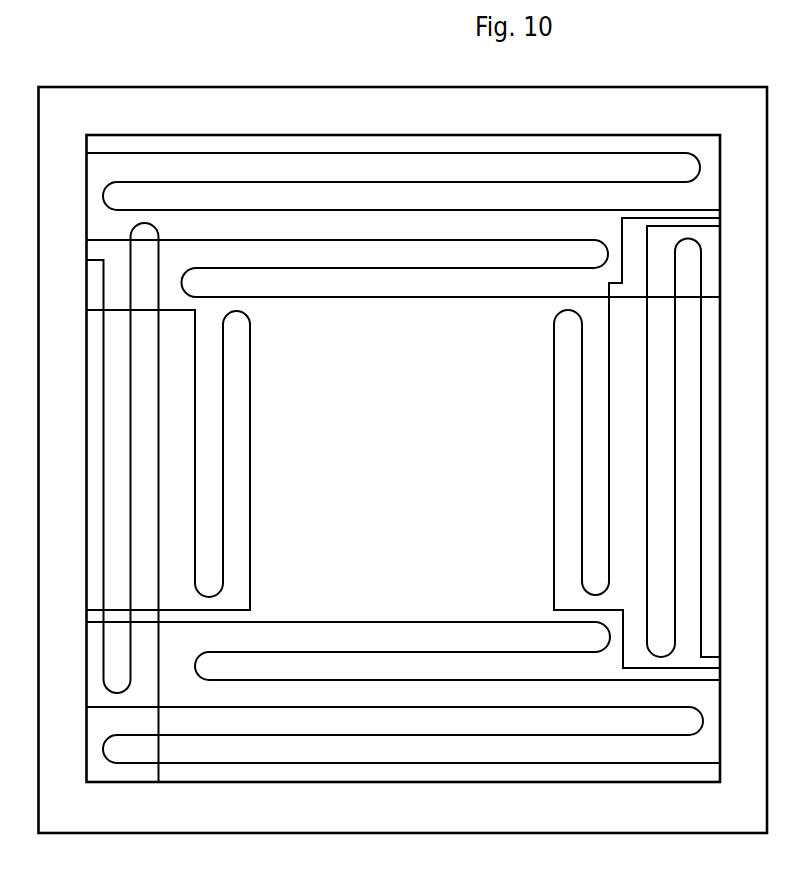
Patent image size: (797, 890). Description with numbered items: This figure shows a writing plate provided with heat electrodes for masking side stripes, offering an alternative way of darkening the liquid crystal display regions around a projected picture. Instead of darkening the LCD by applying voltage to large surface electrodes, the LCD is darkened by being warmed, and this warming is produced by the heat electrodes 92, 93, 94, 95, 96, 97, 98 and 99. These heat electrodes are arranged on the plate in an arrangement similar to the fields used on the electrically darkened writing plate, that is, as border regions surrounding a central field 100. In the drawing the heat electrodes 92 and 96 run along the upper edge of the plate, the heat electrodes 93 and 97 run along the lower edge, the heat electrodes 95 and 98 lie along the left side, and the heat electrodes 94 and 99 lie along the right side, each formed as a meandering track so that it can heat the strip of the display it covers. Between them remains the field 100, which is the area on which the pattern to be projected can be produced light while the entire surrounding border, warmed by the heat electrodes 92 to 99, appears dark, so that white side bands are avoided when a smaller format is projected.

The heat electrode 92 is at (263, 153).
The heat electrode 93 is at (310, 763).
The heat electrode 94 is at (675, 423).
The heat electrode 95 is at (158, 405).
The heat electrode 96 is at (368, 240).
The heat electrode 97 is at (348, 652).
The heat electrode 98 is at (223, 483).
The heat electrode 99 is at (610, 502).
The field 100 is at (403, 464).